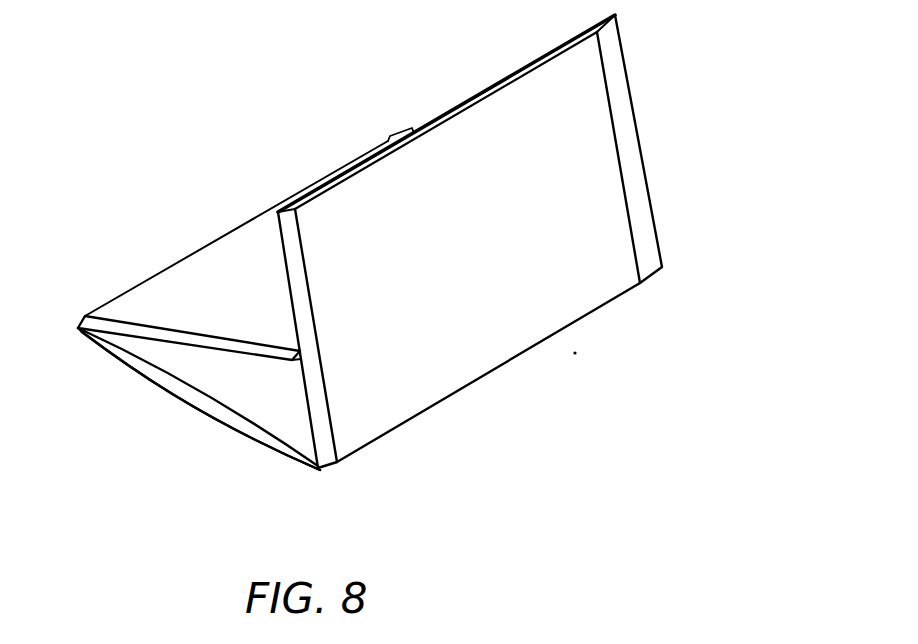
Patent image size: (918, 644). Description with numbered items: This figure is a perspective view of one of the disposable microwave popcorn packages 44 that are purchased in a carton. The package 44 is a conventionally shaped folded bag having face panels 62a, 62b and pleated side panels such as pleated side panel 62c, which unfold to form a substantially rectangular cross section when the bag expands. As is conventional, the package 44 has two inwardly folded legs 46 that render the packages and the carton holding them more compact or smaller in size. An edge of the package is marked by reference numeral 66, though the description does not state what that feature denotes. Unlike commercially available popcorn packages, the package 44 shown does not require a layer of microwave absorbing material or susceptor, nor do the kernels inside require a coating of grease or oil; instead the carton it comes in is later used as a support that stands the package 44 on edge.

The package 44 is at (517, 382).
The inwardly folded legs 46 is at (180, 330).
The face panel 62a is at (234, 246).
The face panel 62b is at (139, 342).
The pleated side panel 62c is at (166, 381).
The flap edge 66 is at (187, 408).